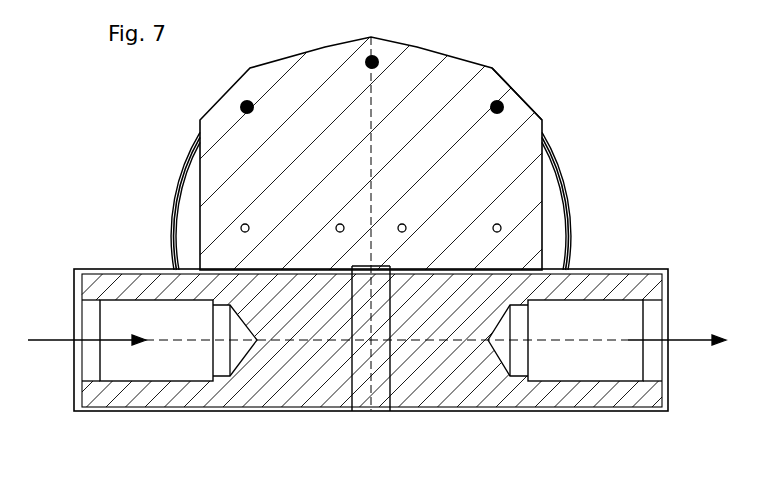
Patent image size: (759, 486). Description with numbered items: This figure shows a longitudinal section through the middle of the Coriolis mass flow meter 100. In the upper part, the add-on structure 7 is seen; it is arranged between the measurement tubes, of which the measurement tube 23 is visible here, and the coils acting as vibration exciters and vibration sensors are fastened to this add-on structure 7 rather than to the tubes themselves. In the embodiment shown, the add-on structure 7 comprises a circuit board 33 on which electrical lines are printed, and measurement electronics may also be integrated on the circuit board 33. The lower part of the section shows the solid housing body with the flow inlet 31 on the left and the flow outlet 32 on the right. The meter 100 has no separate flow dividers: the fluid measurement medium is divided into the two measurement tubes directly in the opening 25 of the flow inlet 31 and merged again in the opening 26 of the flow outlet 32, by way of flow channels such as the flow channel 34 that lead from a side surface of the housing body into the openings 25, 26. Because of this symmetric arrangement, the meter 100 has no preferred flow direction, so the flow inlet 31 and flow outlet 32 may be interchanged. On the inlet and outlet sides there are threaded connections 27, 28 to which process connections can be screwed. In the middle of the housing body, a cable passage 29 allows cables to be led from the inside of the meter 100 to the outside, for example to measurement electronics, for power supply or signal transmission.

The add-on structure 7 is at (558, 129).
The measurement tube 23 is at (567, 193).
The opening of the flow inlet 25 is at (145, 361).
The opening of the flow outlet 26 is at (552, 365).
The threaded connection 27 is at (90, 316).
The threaded connection 28 is at (655, 313).
The cable passage 29 is at (373, 360).
The flow inlet 31 is at (87, 353).
The flow outlet 32 is at (677, 353).
The circuit board 33 is at (442, 84).
The flow channel 34 is at (173, 316).
The Coriolis mass flow meter 100 is at (155, 152).